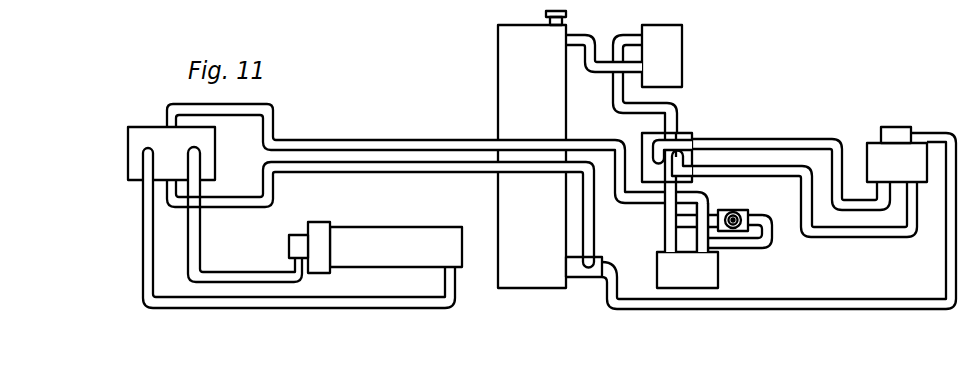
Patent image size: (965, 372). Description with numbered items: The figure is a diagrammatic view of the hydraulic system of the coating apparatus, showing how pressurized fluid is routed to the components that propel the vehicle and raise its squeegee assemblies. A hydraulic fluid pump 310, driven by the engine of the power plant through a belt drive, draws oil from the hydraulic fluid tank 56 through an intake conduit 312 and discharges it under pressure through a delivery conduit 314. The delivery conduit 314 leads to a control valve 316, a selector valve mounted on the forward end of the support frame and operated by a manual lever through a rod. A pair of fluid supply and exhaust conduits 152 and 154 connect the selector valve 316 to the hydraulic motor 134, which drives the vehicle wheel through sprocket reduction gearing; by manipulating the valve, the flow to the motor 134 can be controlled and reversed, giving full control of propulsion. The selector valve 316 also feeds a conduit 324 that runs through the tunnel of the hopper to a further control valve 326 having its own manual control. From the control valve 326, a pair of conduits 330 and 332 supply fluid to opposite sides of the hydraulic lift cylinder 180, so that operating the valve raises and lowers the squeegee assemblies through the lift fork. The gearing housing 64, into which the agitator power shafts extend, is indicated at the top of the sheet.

The gearing housing 64 is at (408, 9).
The hydraulic fluid tank 56 is at (522, 65).
The hydraulic fluid pump 310 is at (658, 56).
The intake conduit 312 is at (603, 70).
The delivery conduit 314 is at (660, 113).
The control valve 316 is at (693, 156).
The conduit 324 is at (327, 129).
The control valve 326 is at (133, 154).
The conduit 330 is at (143, 231).
The conduit 332 is at (227, 280).
The hydraulic lift cylinder 180 is at (369, 240).
The fluid conduit 154 is at (773, 138).
The hydraulic motor 134 is at (883, 153).
The fluid conduit 152 is at (868, 229).